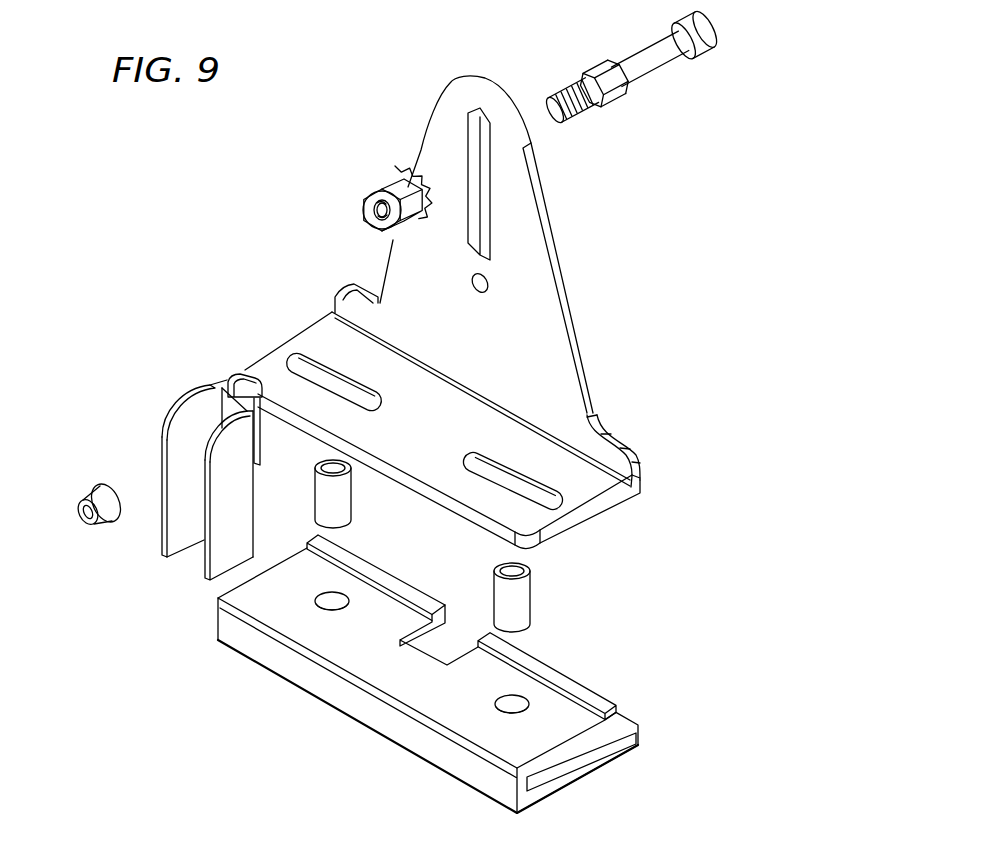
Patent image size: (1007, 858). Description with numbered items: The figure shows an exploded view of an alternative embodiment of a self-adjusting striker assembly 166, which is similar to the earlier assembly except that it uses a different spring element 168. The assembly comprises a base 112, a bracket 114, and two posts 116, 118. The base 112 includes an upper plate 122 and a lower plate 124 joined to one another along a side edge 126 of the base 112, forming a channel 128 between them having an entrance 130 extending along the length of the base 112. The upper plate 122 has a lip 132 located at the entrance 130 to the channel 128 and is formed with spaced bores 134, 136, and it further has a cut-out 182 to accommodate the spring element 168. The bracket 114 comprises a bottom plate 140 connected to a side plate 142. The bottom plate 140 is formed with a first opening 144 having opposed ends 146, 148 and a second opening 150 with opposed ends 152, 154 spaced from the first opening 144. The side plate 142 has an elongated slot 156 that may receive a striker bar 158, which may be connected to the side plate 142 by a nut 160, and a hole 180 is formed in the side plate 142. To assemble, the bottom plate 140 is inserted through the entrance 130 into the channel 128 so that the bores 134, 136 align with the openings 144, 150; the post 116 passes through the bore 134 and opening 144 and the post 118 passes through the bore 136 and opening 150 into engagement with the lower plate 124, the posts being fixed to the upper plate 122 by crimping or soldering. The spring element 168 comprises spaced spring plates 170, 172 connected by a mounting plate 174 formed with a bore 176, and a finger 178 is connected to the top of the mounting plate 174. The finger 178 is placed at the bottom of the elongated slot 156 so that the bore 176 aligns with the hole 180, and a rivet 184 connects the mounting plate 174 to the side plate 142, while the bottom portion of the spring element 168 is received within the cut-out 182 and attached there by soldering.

The base 112 is at (697, 712).
The bracket 114 is at (694, 254).
The post 116 is at (352, 510).
The post 118 is at (532, 598).
The upper plate 122 is at (425, 690).
The lower plate 124 is at (584, 750).
The side edge 126 is at (325, 684).
The channel 128 is at (562, 785).
The entrance 130 is at (612, 714).
The lip 132 is at (560, 672).
The bore 134 is at (322, 606).
The bore 136 is at (504, 714).
The bottom plate 140 is at (583, 477).
The side plate 142 is at (592, 352).
The first opening 144 is at (331, 386).
The end 146 is at (308, 354).
The end 148 is at (352, 436).
The second opening 150 is at (520, 498).
The end 152 is at (428, 460).
The end 154 is at (565, 490).
The elongated slot 156 is at (477, 112).
The striker bar 158 is at (650, 76).
The nut 160 is at (372, 186).
The striker assembly 166 is at (143, 229).
The spring element 168 is at (108, 435).
The spring plate 170 is at (178, 402).
The spring plate 172 is at (203, 568).
The mounting plate 174 is at (258, 445).
The bore 176 is at (230, 380).
The finger 178 is at (242, 370).
The hole 180 is at (490, 276).
The cut-out 182 is at (452, 637).
The rivet 184 is at (75, 502).